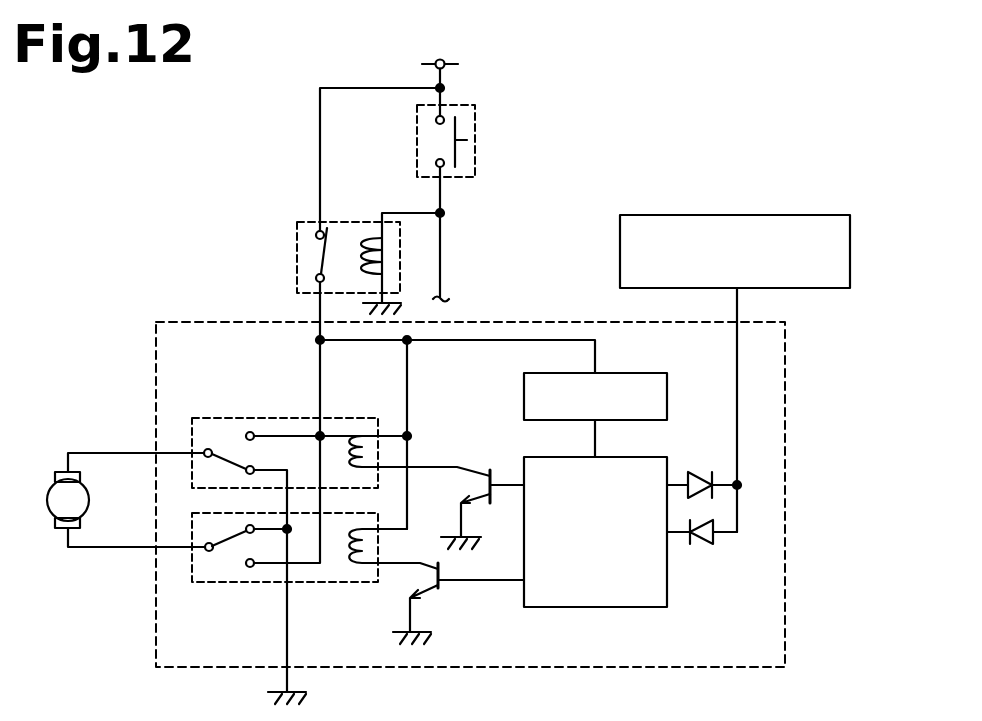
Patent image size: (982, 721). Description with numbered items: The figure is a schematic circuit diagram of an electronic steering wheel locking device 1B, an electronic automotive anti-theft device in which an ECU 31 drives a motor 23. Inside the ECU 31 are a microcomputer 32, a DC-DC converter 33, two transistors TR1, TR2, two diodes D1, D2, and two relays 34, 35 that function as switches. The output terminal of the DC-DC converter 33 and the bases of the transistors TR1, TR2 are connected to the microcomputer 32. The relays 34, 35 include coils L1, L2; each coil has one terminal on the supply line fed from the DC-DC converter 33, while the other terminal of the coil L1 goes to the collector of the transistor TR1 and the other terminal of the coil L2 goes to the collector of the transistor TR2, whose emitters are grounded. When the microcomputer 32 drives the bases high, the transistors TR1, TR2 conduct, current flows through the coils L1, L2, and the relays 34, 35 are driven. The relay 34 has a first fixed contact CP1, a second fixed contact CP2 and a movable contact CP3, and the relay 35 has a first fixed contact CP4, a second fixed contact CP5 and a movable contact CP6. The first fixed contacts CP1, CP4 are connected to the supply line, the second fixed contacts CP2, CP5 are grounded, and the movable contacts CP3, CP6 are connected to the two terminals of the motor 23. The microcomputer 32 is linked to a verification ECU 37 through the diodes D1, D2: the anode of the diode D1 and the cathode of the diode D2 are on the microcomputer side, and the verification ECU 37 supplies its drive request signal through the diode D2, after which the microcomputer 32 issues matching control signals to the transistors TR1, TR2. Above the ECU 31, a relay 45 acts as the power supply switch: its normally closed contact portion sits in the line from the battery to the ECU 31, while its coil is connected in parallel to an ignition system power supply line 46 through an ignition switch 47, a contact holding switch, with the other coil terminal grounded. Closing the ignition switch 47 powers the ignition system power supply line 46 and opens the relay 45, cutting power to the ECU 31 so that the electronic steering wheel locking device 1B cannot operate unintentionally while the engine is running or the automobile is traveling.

The electronic steering wheel locking device 1B is at (764, 160).
The motor 23 is at (48, 490).
The ECU 31 is at (787, 583).
The microcomputer 32 is at (645, 609).
The DC-DC converter 33 is at (637, 373).
The relay 34 is at (342, 413).
The relay 35 is at (310, 585).
The verification ECU 37 is at (852, 250).
The relay 45 is at (360, 215).
The ignition system power supply line 46 is at (443, 240).
The ignition switch 47 is at (477, 118).
The first fixed contact CP1 is at (252, 429).
The second fixed contact CP2 is at (233, 468).
The movable contact CP3 is at (246, 468).
The first fixed contact CP4 is at (250, 572).
The second fixed contact CP5 is at (237, 538).
The movable contact CP6 is at (205, 549).
The coil L1 is at (367, 430).
The coil L2 is at (362, 563).
The transistor TR1 is at (477, 470).
The transistor TR2 is at (440, 592).
The diode D1 is at (705, 477).
The diode D2 is at (700, 543).